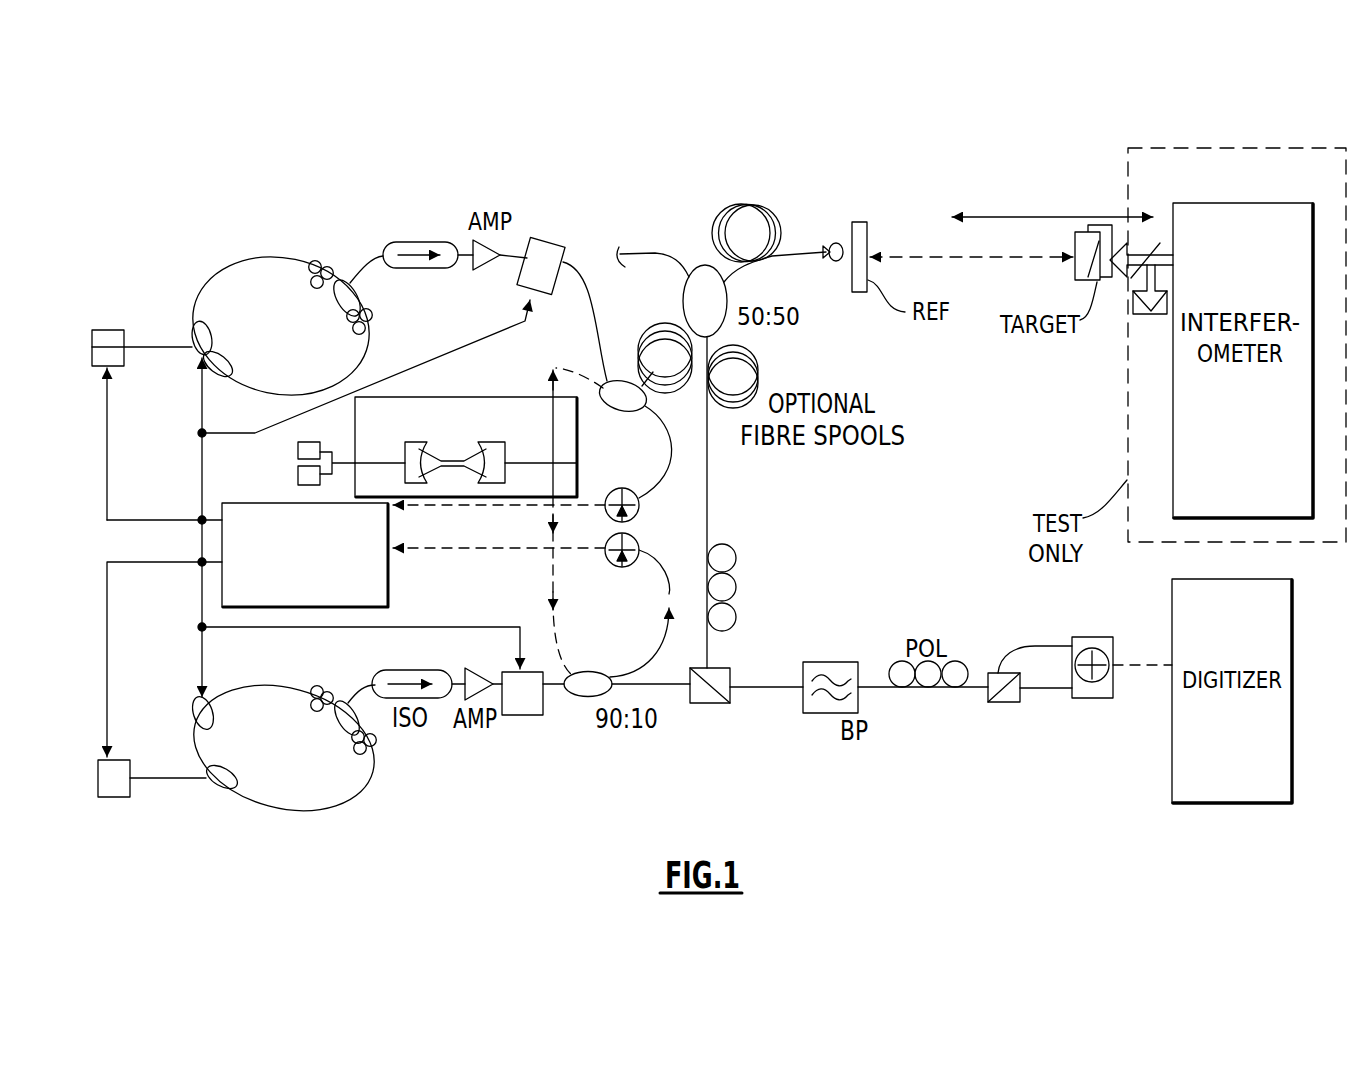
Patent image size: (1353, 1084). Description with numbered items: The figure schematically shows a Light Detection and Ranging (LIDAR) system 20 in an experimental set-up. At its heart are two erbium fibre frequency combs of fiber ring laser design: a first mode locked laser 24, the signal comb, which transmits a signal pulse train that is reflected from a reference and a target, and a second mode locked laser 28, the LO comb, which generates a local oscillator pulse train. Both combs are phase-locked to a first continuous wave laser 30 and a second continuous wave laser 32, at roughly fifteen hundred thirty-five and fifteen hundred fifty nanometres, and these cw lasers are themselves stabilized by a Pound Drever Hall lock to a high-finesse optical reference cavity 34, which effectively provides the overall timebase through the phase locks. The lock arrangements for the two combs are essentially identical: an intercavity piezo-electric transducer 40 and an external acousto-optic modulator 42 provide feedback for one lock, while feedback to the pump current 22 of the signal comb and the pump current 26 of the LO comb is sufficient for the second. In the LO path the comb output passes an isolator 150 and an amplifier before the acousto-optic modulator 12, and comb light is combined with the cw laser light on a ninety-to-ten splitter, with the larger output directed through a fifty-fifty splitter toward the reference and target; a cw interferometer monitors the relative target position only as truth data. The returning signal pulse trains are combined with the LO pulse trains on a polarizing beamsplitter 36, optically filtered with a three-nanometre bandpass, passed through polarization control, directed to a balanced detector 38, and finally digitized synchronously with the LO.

The Light Detection and Ranging (LIDAR) system 20 is at (797, 160).
The pump current 22 is at (107, 330).
The first mode locked laser 24 is at (281, 257).
The pump current 26 is at (112, 760).
The second mode locked laser 28 is at (274, 687).
The first continuous wave laser 30 is at (308, 442).
The second continuous wave laser 32 is at (298, 461).
The optical reference cavity 34 is at (484, 397).
The polarizing beamsplitter 36 is at (764, 748).
The balanced detector 38 is at (1092, 745).
The intercavity piezo-electric transducer 40 is at (198, 358).
The external acousto-optic modulator 42 is at (545, 240).
The optical isolator 150 is at (420, 237).
The acousto-optic modulator 12 is at (560, 748).